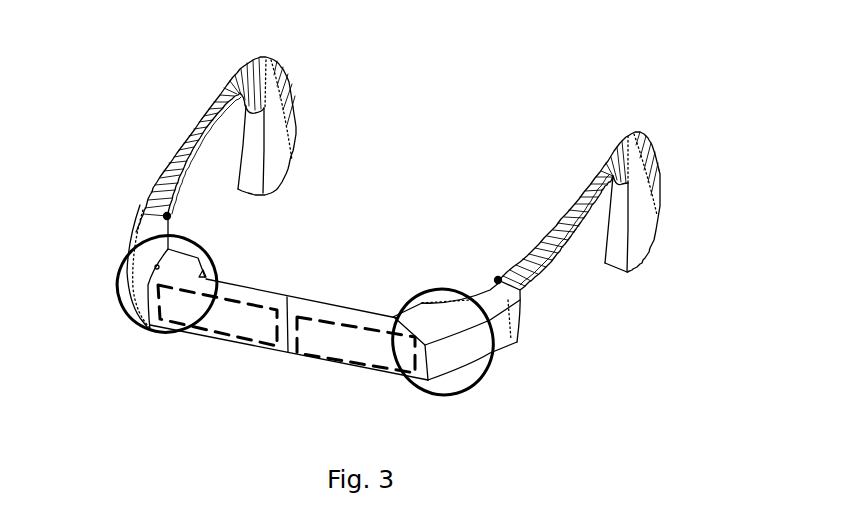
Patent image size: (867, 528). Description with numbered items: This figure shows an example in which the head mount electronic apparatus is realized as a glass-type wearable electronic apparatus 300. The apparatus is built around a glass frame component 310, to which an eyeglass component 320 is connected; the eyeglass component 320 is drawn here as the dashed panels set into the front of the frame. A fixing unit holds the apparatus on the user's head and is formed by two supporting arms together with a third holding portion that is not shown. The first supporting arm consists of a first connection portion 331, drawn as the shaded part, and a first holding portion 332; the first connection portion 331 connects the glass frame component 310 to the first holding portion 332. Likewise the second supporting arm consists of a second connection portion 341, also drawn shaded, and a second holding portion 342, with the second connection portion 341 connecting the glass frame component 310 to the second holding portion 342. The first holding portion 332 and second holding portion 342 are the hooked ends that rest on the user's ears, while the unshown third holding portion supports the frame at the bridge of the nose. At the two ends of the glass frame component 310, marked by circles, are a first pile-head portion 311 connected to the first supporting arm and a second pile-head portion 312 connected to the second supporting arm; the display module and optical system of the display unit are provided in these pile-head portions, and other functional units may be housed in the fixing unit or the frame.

The wearable electronic apparatus 300 is at (585, 40).
The glass frame component 310 is at (232, 292).
The first pile-head portion 311 is at (125, 290).
The second pile-head portion 312 is at (480, 377).
The eyeglass component 320 is at (328, 358).
The first connection portion 331 is at (197, 127).
The first holding portion 332 is at (281, 80).
The second connection portion 341 is at (577, 207).
The second holding portion 342 is at (660, 158).